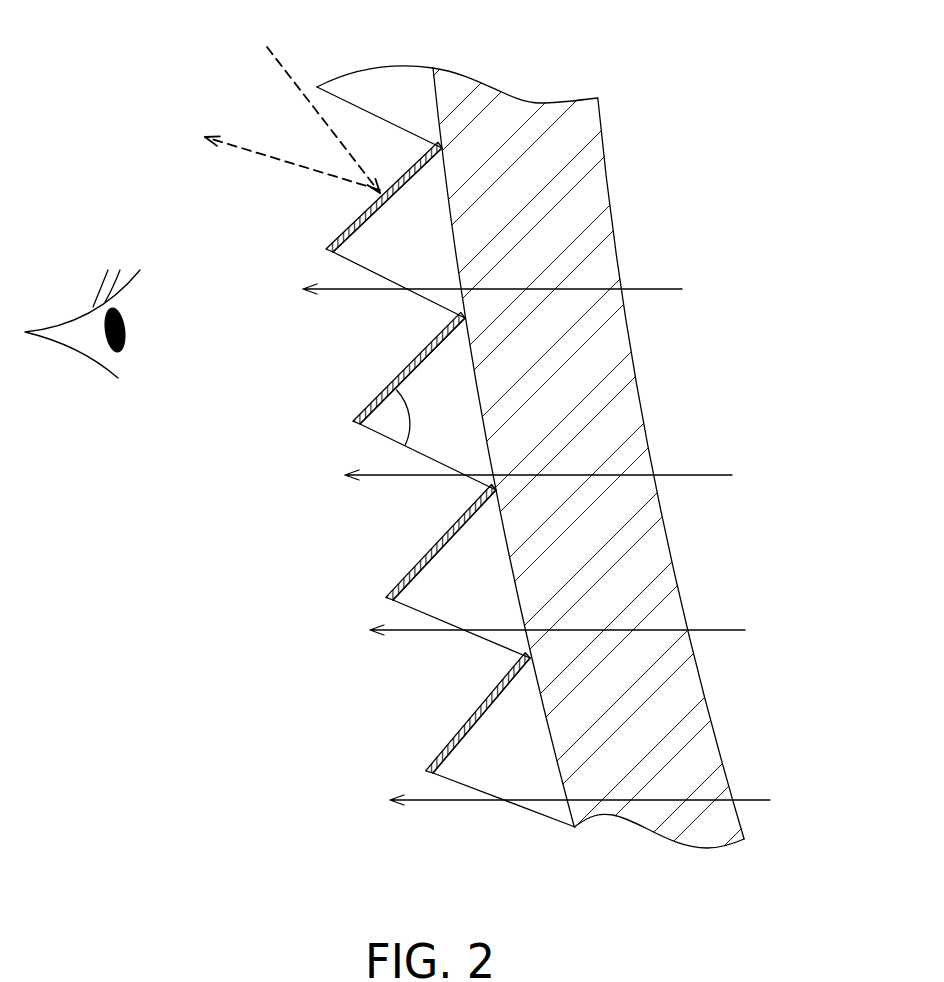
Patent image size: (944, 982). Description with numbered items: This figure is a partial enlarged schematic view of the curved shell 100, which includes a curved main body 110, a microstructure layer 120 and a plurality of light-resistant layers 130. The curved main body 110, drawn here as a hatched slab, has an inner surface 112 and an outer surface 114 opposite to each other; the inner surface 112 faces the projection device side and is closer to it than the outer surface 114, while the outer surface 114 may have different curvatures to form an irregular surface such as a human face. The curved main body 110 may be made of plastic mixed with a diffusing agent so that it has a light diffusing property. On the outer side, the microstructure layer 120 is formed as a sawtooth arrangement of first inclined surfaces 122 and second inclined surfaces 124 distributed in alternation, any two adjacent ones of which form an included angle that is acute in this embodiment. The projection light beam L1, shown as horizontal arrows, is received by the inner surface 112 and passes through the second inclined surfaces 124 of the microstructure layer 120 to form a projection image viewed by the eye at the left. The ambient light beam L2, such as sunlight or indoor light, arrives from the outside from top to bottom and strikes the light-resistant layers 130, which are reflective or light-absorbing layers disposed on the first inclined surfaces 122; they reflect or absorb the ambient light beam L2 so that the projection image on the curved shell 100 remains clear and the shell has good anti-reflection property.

The curved shell 100 is at (472, 491).
The curved main body 110 is at (472, 491).
The inner surface 112 is at (643, 333).
The outer surface 114 is at (494, 401).
The microstructure layer 120 is at (401, 457).
The first inclined surfaces 122 is at (368, 392).
The second inclined surfaces 124 is at (370, 446).
The light-resistant layers 130 is at (333, 240).
The projection light beam L1 is at (536, 551).
The ambient light beam L2 is at (292, 113).